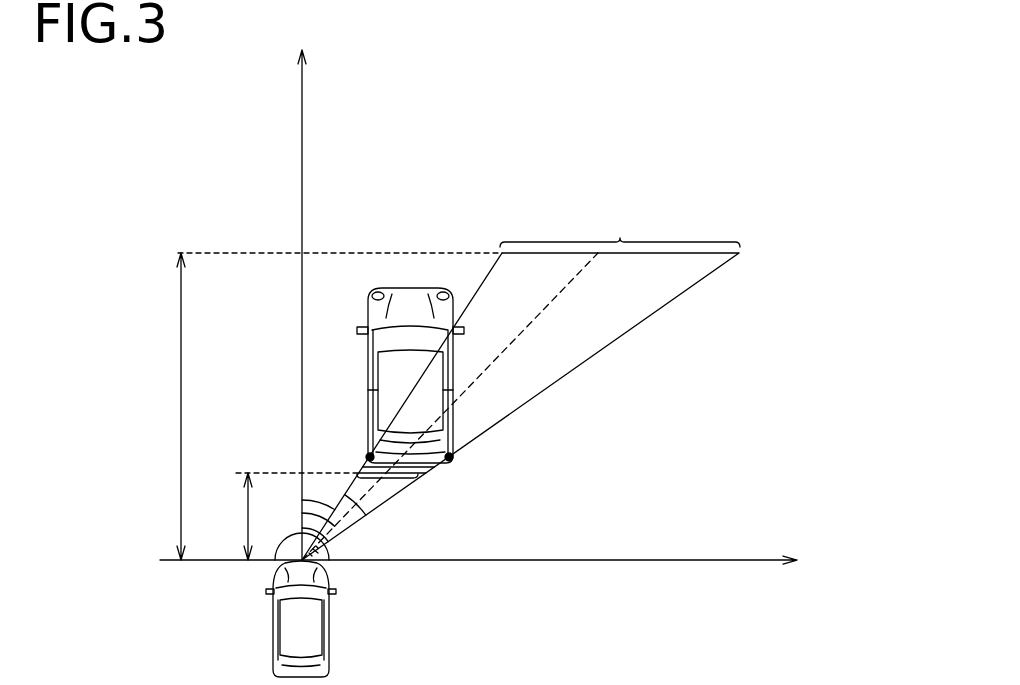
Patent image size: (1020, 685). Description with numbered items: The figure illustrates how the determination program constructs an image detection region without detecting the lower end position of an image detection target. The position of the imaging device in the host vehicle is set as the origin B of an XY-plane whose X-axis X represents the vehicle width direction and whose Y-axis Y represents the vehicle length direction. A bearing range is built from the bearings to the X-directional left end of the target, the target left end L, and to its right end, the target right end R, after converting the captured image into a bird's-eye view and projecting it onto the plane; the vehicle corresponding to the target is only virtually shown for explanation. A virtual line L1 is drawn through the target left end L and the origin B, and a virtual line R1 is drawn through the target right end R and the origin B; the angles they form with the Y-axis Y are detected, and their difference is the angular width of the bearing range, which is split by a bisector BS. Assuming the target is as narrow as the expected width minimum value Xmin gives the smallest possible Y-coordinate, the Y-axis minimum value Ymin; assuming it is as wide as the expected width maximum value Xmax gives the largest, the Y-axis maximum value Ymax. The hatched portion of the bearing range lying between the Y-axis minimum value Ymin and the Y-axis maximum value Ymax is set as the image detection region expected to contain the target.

The virtual line L1 is at (483, 281).
The virtual line R1 is at (605, 348).
The bisector BS is at (450, 406).
The target left end L is at (362, 458).
The target right end R is at (461, 458).
The origin B is at (272, 565).
The expected width maximum value Xmax is at (620, 229).
The expected width minimum value Xmin is at (399, 482).
The Y-axis maximum value Ymax is at (308, 406).
The Y-axis minimum value Ymin is at (270, 516).
The X-axis X is at (478, 576).
The Y-axis Y is at (294, 304).